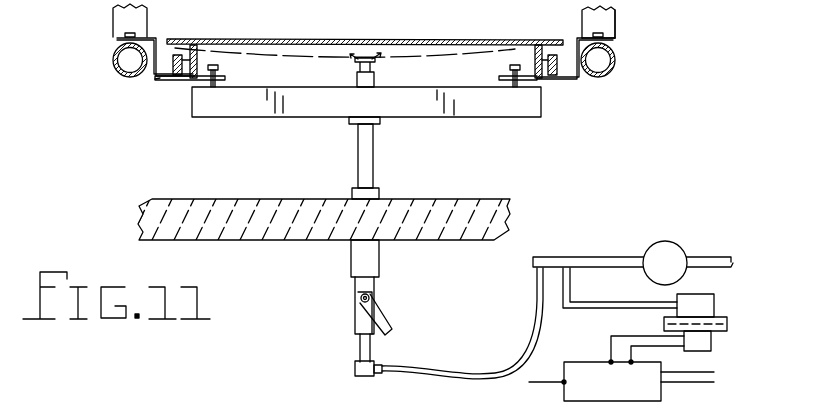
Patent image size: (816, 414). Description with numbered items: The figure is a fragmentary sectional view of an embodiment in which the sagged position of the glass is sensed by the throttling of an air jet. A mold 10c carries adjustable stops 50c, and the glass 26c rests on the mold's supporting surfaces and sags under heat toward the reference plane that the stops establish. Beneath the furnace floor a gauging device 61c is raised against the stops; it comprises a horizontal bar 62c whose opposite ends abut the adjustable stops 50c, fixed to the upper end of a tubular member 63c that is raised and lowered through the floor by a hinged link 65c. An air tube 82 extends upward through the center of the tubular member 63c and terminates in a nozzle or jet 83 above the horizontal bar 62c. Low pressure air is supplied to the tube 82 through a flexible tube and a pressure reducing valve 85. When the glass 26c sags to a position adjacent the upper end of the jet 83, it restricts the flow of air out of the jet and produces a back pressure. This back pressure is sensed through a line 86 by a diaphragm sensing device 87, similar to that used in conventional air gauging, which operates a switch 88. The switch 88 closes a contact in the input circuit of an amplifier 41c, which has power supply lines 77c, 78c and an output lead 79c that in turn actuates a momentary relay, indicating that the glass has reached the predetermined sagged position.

The glass 26c is at (407, 43).
The adjustable stops 50c is at (220, 67).
The mold 10c is at (164, 91).
The gauging device 61c is at (191, 125).
The horizontal bar 62c is at (243, 124).
The tubular member 63c is at (358, 168).
The hinged link 65c is at (381, 308).
The air tube 82 is at (360, 350).
The nozzle or jet 83 is at (485, 373).
The pressure reducing valve 85 is at (652, 244).
The line 86 is at (596, 310).
The diaphragm sensing device 87 is at (714, 302).
The switch 88 is at (711, 345).
The amplifier 41c is at (604, 360).
The power supply line 77c is at (714, 372).
The power supply line 78c is at (714, 384).
The output lead 79c is at (549, 383).